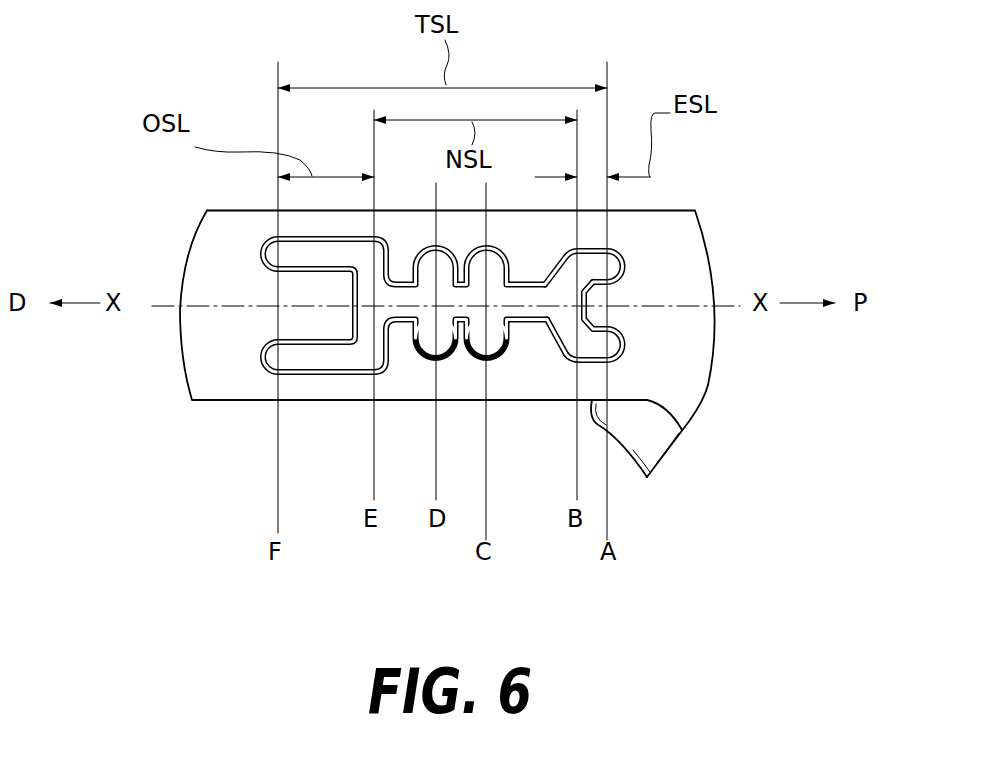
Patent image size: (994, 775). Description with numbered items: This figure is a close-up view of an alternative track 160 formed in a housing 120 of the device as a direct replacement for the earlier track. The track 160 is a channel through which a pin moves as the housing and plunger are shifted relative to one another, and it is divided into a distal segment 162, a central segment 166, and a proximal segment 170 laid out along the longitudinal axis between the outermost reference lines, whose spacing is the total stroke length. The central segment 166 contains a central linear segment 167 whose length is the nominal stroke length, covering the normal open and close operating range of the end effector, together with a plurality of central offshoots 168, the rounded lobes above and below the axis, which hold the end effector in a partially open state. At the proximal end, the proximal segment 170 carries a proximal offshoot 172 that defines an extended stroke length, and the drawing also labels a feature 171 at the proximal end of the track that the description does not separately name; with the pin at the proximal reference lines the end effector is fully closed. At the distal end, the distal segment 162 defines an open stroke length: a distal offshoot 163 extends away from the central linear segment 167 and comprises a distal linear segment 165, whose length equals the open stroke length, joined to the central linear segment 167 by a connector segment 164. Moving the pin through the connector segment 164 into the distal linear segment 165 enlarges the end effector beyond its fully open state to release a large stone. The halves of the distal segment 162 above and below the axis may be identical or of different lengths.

The housing 120 is at (473, 329).
The track 160 is at (247, 243).
The distal segment 162 is at (213, 382).
The distal offshoot 163 is at (312, 250).
The connector segment 164 is at (386, 234).
The distal linear segment 165 is at (327, 380).
The central segment 166 is at (538, 360).
The central linear segment 167 is at (527, 283).
The central offshoots 168 is at (424, 358).
The proximal segment 170 is at (652, 363).
The end notch 171 is at (607, 298).
The proximal offshoot 172 is at (590, 343).